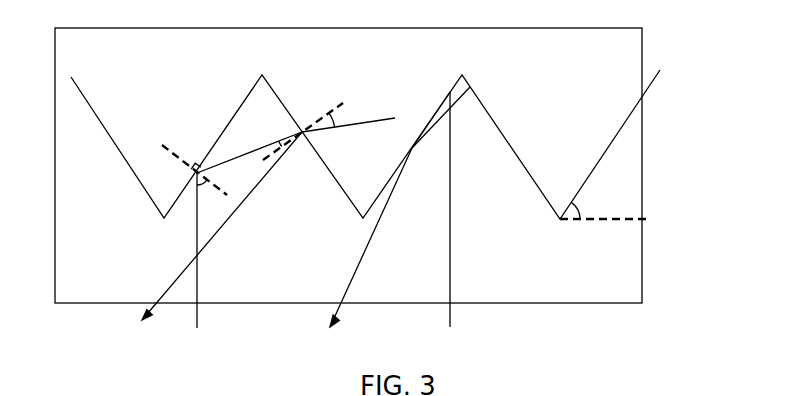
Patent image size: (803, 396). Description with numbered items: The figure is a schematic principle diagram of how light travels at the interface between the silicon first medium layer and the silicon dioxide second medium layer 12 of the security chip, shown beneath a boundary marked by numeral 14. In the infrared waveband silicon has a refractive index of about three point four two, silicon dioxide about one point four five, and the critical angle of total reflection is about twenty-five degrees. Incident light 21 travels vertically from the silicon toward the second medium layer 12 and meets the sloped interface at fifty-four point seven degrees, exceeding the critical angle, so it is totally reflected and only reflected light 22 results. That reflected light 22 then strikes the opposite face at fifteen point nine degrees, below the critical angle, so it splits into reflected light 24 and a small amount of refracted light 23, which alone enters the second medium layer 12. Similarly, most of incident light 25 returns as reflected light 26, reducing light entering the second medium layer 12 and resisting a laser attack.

The second medium layer 12 is at (642, 160).
The silicon dioxide layer 14 is at (637, 47).
The incident light 21 is at (197, 278).
The reflected light 22 is at (245, 153).
The refracted light 23 is at (388, 118).
The reflected light 24 is at (185, 270).
The incident light 25 is at (450, 232).
The reflected light 26 is at (370, 240).